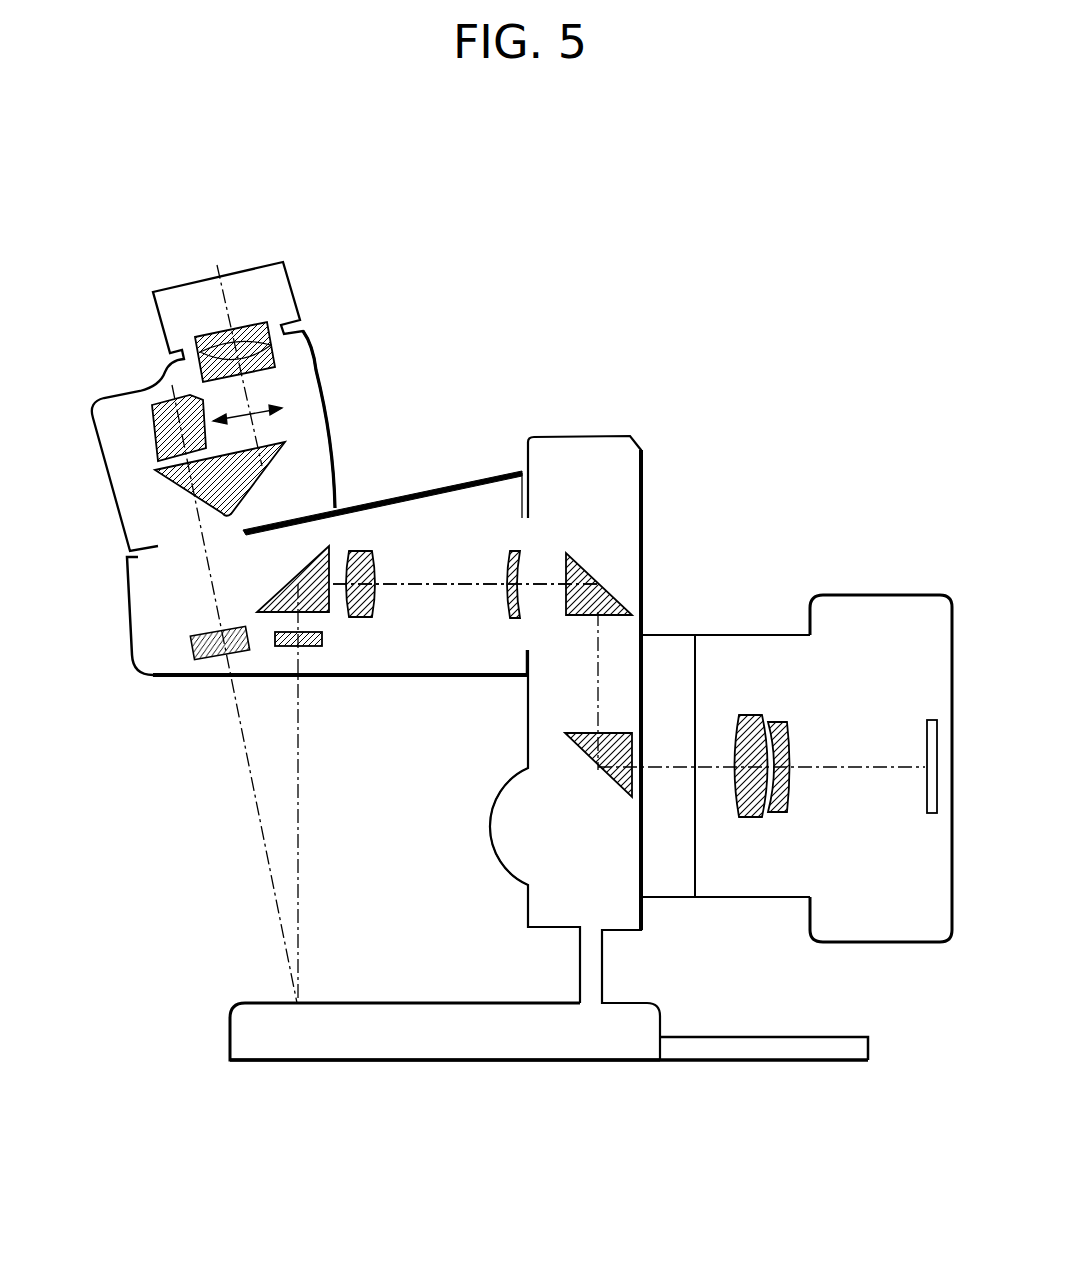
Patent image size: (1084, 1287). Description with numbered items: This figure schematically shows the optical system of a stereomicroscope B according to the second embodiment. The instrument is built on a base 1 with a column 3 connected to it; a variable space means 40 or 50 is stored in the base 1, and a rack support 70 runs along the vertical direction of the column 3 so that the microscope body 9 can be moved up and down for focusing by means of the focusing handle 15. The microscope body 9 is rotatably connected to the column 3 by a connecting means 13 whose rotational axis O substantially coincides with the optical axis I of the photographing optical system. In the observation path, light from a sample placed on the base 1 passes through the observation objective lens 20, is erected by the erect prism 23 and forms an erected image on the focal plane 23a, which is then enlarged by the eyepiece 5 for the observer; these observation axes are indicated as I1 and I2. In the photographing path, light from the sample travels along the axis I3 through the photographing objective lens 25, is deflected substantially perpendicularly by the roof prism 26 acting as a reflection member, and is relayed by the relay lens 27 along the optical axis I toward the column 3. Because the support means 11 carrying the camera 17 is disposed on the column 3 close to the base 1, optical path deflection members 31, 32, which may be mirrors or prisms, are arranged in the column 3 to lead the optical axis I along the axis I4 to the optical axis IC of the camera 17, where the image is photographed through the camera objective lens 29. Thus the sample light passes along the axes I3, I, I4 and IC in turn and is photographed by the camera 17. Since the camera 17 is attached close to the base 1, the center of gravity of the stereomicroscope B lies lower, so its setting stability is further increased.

The base 1 is at (262, 1003).
The column 3 is at (617, 455).
The eyepiece 5 is at (190, 297).
The microscope body 9 is at (368, 548).
The support means 11 is at (670, 653).
The connecting means 13 is at (530, 533).
The focusing handle 15 is at (513, 855).
The camera 17 is at (890, 613).
The observation objective lens 20 is at (192, 643).
The erect prism 23 is at (190, 485).
The focal plane 23a is at (262, 408).
The photographing objective lens 25 is at (322, 643).
The roof prism 26 is at (318, 541).
The relay lens 27 is at (512, 549).
The camera objective lens 29 is at (773, 725).
The optical path deflection member 31 is at (598, 565).
The optical path deflection member 32 is at (613, 787).
The variable space means 40 is at (764, 1105).
The variable space means 50 is at (757, 1063).
The rack support 70 is at (597, 967).
The stereomicroscope B is at (423, 328).
The rotational axis O is at (540, 583).
The optical axis I is at (452, 588).
The optical axis I1 is at (223, 634).
The optical axis I2 is at (252, 777).
The optical axis I3 is at (301, 858).
The optical axis I4 is at (597, 693).
The optical axis IC is at (893, 768).